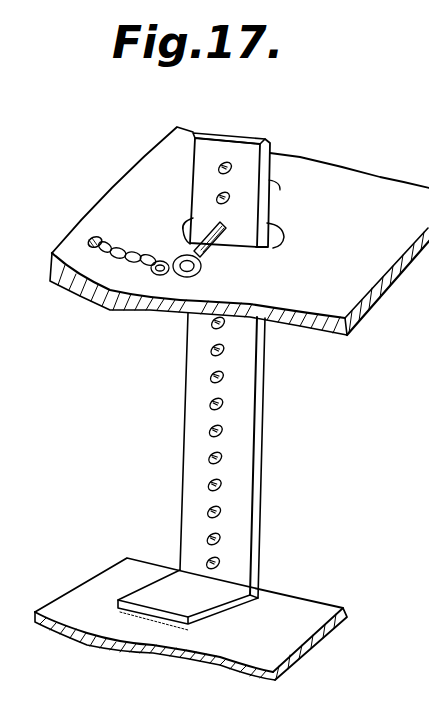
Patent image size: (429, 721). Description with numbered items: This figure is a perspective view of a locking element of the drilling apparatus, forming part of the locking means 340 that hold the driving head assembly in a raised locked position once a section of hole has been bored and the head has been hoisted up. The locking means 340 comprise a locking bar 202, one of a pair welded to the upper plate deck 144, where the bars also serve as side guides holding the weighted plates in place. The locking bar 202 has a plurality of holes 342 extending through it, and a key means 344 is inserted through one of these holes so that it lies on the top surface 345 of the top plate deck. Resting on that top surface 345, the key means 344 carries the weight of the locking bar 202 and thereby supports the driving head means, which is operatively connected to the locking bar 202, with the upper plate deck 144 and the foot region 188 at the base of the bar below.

The locking means 340 is at (276, 130).
The top surface 345 is at (396, 226).
The key means 344 is at (213, 243).
The holes 342 is at (226, 356).
The locking bars 202 is at (238, 450).
The base plate top surface 188 is at (306, 638).
The upper plate deck 144 is at (333, 632).